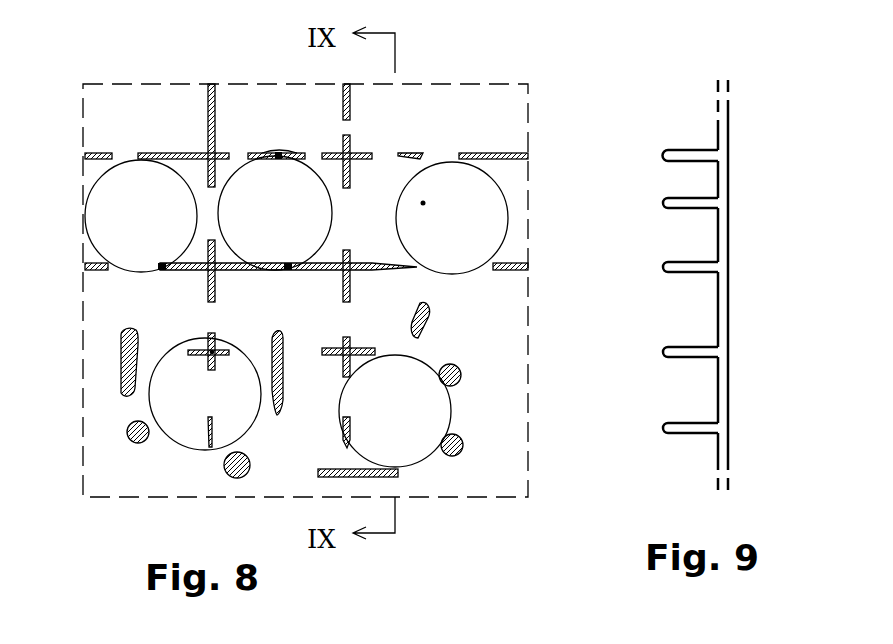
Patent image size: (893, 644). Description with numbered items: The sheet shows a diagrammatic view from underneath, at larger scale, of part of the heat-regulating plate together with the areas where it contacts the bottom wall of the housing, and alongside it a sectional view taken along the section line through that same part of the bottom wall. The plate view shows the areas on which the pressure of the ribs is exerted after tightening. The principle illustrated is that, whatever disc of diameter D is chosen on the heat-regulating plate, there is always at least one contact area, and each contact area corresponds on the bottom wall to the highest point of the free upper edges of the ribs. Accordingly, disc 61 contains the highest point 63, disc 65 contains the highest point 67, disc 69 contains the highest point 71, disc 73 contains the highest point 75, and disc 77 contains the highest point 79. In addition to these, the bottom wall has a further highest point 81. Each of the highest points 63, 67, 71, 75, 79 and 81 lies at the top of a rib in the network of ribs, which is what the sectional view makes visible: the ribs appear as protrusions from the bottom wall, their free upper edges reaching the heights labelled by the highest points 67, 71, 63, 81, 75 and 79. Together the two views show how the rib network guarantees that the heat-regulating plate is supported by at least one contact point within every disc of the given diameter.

In FIG. 8, the disc 61 is at (101, 176).
In FIG. 8, the highest point 63 is at (162, 267).
In FIG. 9, the highest point 63 is at (662, 265).
In FIG. 8, the disc 65 is at (282, 152).
In FIG. 8, the highest point 67 is at (276, 152).
In FIG. 9, the highest point 67 is at (662, 156).
In FIG. 8, the disc 69 is at (500, 191).
In FIG. 8, the highest point 71 is at (423, 203).
In FIG. 9, the highest point 71 is at (662, 203).
In FIG. 8, the disc 73 is at (150, 400).
In FIG. 8, the highest point 75 is at (212, 352).
In FIG. 9, the highest point 75 is at (662, 350).
In FIG. 8, the disc 77 is at (452, 417).
In FIG. 8, the highest point 79 is at (342, 420).
In FIG. 9, the highest point 79 is at (662, 428).
In FIG. 8, the highest point 81 is at (288, 270).
In FIG. 9, the highest point 81 is at (662, 270).